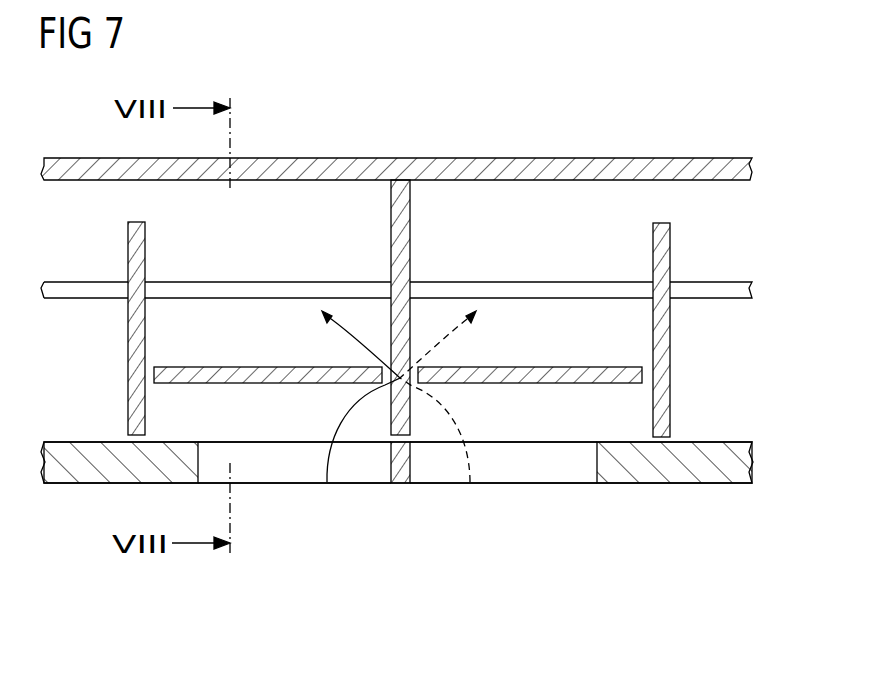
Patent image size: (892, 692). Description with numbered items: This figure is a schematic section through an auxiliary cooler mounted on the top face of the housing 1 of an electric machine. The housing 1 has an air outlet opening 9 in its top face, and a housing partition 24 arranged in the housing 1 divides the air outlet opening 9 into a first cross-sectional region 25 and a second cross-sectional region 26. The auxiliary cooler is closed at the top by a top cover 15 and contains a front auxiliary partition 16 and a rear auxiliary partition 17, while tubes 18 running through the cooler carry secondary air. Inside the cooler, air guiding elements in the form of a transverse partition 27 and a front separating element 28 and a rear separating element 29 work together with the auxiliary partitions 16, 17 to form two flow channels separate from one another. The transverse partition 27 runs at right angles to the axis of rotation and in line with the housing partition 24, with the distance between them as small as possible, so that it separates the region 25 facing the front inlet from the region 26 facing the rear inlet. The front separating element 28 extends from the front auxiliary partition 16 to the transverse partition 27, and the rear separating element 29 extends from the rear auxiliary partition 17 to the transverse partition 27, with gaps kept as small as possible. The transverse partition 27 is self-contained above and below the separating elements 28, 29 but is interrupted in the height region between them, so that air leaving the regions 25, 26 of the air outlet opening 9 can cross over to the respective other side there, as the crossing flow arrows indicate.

The housing 1 is at (668, 472).
The air outlet opening 9 is at (354, 560).
The top cover 15 is at (608, 160).
The front auxiliary partition 16 is at (135, 342).
The rear auxiliary partition 17 is at (668, 335).
The tubes 18 is at (716, 290).
The housing partition 24 is at (398, 483).
The first cross-sectional region 25 is at (280, 483).
The second cross-sectional region 26 is at (518, 483).
The transverse partition 27 is at (410, 232).
The front separating element 28 is at (207, 375).
The rear separating element 29 is at (576, 378).